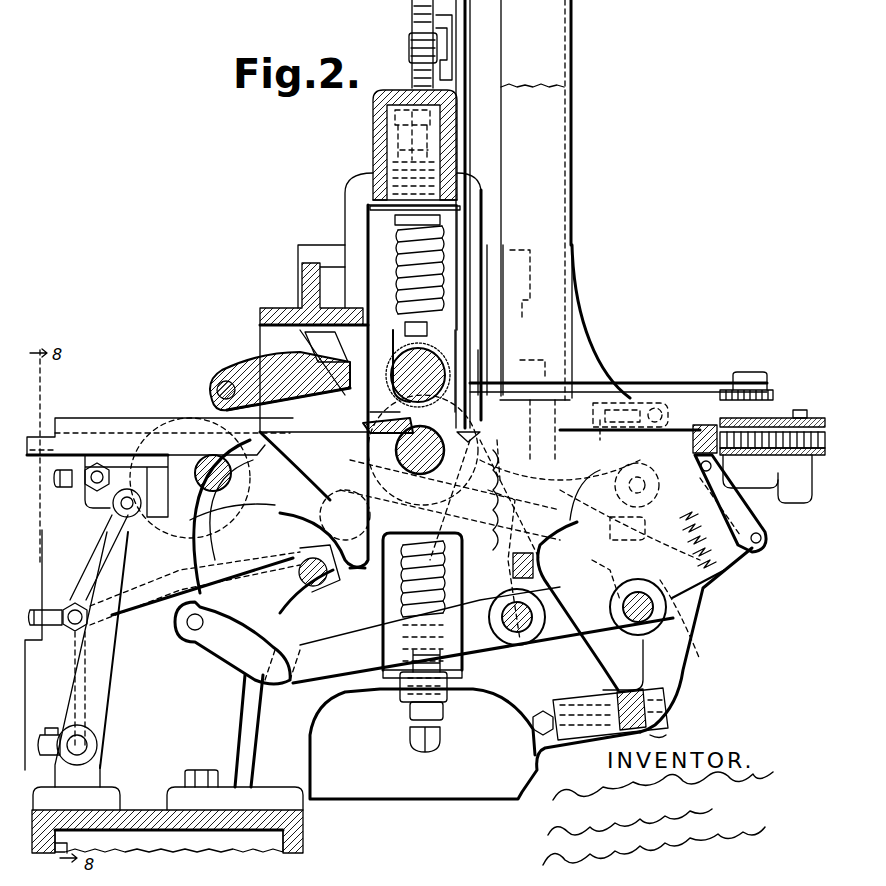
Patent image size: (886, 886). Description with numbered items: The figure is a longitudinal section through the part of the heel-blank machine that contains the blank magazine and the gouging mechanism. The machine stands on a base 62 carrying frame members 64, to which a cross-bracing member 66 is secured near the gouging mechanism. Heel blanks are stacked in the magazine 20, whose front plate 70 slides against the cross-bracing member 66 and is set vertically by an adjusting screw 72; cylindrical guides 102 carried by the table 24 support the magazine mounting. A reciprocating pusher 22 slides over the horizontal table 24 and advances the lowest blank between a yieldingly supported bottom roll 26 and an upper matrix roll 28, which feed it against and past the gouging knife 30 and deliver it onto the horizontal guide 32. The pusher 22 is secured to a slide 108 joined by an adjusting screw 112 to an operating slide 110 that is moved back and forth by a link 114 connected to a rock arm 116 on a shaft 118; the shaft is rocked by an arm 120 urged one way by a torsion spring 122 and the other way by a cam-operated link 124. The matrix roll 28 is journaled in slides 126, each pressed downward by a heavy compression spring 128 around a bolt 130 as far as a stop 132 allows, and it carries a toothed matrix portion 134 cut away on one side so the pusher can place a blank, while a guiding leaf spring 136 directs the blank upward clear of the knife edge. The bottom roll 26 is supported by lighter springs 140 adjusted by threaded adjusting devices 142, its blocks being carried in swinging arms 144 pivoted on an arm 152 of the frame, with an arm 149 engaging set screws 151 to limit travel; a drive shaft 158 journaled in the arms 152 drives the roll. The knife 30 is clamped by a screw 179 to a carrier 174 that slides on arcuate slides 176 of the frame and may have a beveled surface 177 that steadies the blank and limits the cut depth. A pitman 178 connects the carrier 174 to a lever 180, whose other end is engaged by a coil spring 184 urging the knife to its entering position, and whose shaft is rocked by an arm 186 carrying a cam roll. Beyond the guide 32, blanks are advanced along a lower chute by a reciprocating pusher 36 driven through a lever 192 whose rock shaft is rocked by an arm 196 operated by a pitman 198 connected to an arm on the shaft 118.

The magazine 20 is at (550, 152).
The reciprocating pusher 22 is at (713, 427).
The horizontal table 24 is at (517, 415).
The bottom roll 26 is at (388, 542).
The matrix roll 28 is at (380, 422).
The gouging knife 30 is at (340, 369).
The horizontal guide 32 is at (153, 418).
The reciprocating pusher 36 is at (130, 455).
The base 62 is at (290, 832).
The frame members 64 is at (100, 765).
The cross-bracing member 66 is at (378, 130).
The front plate 70 is at (470, 47).
The adjusting screw 72 is at (410, 15).
The cylindrical guides 102 is at (522, 637).
The slide 108 is at (805, 499).
The operating slide 110 is at (692, 462).
The adjusting screw 112 is at (775, 427).
The link 114 is at (768, 545).
The rock arm 116 is at (673, 592).
The shaft 118 is at (628, 634).
The arm 120 is at (537, 554).
The torsion spring 122 is at (610, 577).
The cam-operated link 124 is at (665, 402).
The slides 126 is at (480, 252).
The compression spring 128 is at (470, 217).
The bolt 130 is at (372, 247).
The stop 132 is at (430, 150).
The matrix portion 134 is at (392, 332).
The guiding leaf spring 136 is at (433, 395).
The springs 140 is at (405, 692).
The threaded adjusting devices 142 is at (440, 737).
The swinging arms 144 is at (167, 582).
The arm 149 is at (495, 427).
The set screws 151 is at (600, 430).
The arm of the machine frame 152 is at (190, 510).
The drive shaft 158 is at (205, 420).
The carrier 174 is at (238, 374).
The arcuate slides 176 is at (293, 302).
The beveled surface 177 is at (290, 420).
The pitman 178 is at (133, 582).
The screw 179 is at (283, 667).
The lever 180 is at (220, 652).
The coil spring 184 is at (700, 525).
The arm 186 is at (540, 540).
The lever 192 is at (108, 550).
The arm 196 is at (62, 647).
The pitman 198 is at (295, 580).